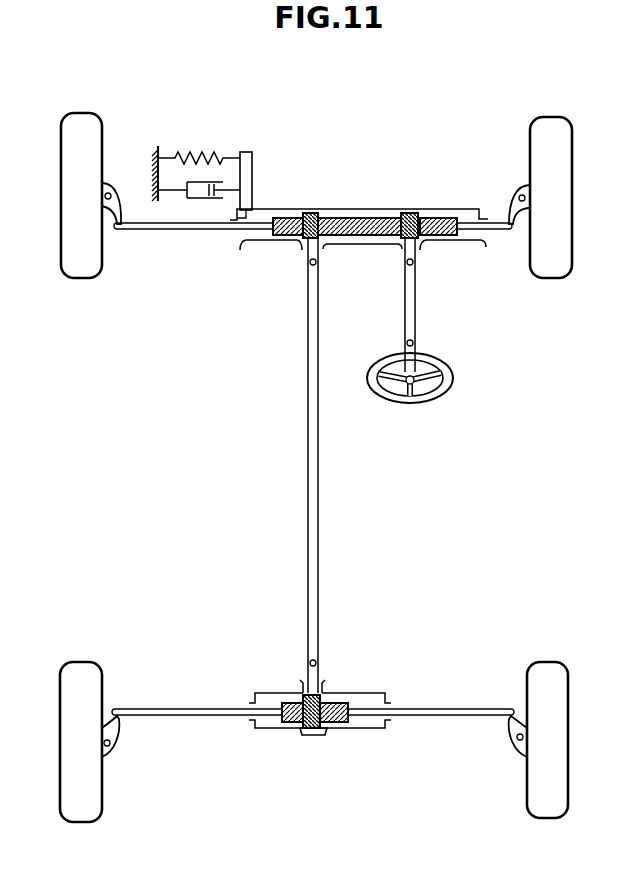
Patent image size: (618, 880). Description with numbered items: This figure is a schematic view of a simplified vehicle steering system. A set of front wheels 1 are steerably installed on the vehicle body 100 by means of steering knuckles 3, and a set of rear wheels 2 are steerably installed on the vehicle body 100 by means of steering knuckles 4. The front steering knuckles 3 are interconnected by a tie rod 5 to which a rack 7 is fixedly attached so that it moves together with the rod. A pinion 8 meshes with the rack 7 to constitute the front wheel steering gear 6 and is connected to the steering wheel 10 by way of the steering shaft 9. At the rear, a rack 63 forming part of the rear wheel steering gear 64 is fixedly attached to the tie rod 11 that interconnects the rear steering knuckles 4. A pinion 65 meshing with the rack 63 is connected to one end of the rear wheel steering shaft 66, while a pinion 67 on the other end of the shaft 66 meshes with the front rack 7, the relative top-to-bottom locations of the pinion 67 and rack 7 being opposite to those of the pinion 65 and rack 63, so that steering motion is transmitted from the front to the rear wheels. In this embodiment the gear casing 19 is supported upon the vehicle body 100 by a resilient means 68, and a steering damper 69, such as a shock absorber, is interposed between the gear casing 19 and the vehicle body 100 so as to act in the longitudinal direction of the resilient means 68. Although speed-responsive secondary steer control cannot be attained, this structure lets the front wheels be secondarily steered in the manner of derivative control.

The front wheel 1 is at (62, 243).
The rear wheel 2 is at (63, 742).
The steering knuckle 3 is at (108, 187).
The steering knuckle 4 is at (118, 735).
The tie rod 5 is at (148, 229).
The front wheel steering gear 6 is at (256, 253).
The rack 7 is at (446, 218).
The pinion 8 is at (422, 247).
The steering shaft 9 is at (415, 302).
The steering wheel 10 is at (448, 387).
The tie rod 11 is at (188, 708).
The gear casing 19 is at (362, 208).
The rack 63 is at (296, 723).
The rear wheel steering gear 64 is at (264, 735).
The pinion 65 is at (327, 734).
The rear wheel steering shaft 66 is at (308, 388).
The pinion 67 is at (307, 239).
The resilient means 68 is at (202, 158).
The steering damper 69 is at (207, 199).
The vehicle body 100 is at (155, 150).